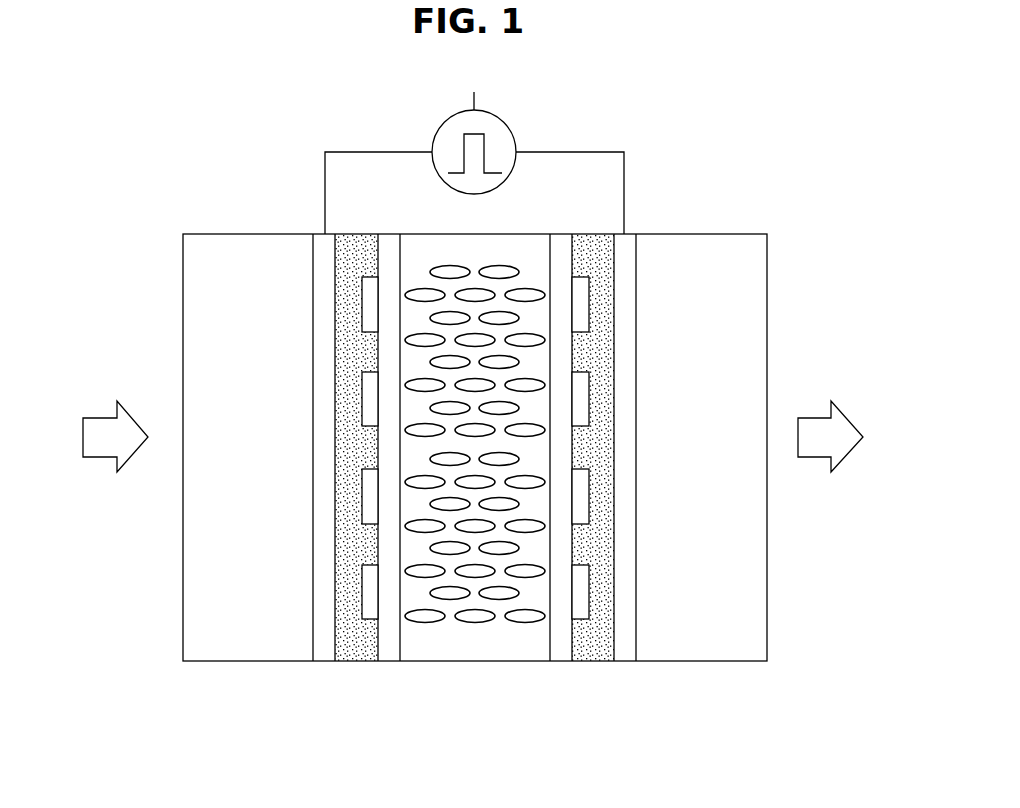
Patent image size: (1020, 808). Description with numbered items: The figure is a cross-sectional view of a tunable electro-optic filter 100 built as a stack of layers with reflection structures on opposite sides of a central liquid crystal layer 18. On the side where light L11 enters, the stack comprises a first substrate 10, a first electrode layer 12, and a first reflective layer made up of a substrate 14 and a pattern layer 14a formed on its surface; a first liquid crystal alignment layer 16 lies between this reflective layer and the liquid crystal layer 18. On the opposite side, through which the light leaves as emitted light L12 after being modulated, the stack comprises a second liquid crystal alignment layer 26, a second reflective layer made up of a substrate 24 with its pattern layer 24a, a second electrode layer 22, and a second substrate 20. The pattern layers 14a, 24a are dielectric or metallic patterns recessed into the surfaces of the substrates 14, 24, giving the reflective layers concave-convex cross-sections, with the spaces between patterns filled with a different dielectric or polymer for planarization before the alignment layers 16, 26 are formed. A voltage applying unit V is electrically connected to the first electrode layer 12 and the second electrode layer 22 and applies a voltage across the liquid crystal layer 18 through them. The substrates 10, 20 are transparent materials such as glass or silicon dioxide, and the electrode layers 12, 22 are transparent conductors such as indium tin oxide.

The tunable electro-optic filter 100 is at (777, 195).
The first substrate 10 is at (235, 655).
The first electrode layer 12 is at (325, 655).
The substrate 14 is at (350, 655).
The pattern layer 14a is at (367, 622).
The first liquid crystal alignment layer 16 is at (390, 655).
The liquid crystal layer 18 is at (468, 655).
The second liquid crystal alignment layer 26 is at (562, 655).
The substrate 24 is at (600, 655).
The pattern layer 24a is at (579, 622).
The second electrode layer 22 is at (627, 655).
The second substrate 20 is at (718, 655).
The voltage applying unit V is at (474, 150).
The light L11 is at (94, 436).
The light L12 is at (851, 436).